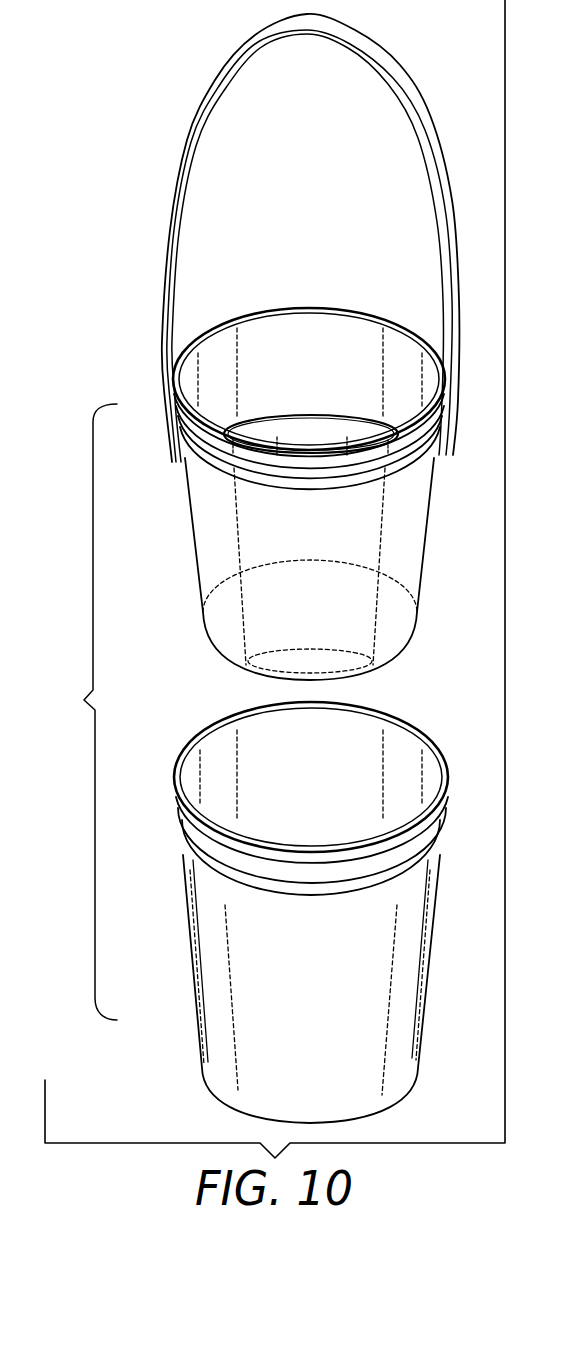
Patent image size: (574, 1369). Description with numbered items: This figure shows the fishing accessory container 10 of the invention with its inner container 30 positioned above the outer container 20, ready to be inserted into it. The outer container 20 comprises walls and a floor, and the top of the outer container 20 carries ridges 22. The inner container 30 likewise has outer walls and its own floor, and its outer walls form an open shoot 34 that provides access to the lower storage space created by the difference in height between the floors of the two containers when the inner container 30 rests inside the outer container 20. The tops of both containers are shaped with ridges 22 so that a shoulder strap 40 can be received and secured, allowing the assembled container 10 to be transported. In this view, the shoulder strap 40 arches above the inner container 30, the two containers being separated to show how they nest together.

The container 10 is at (84, 700).
The outer container 20 is at (172, 962).
The ridges 22 is at (212, 455).
The inner container 30 is at (180, 553).
The open shoot 34 is at (328, 432).
The shoulder strap 40 is at (177, 190).